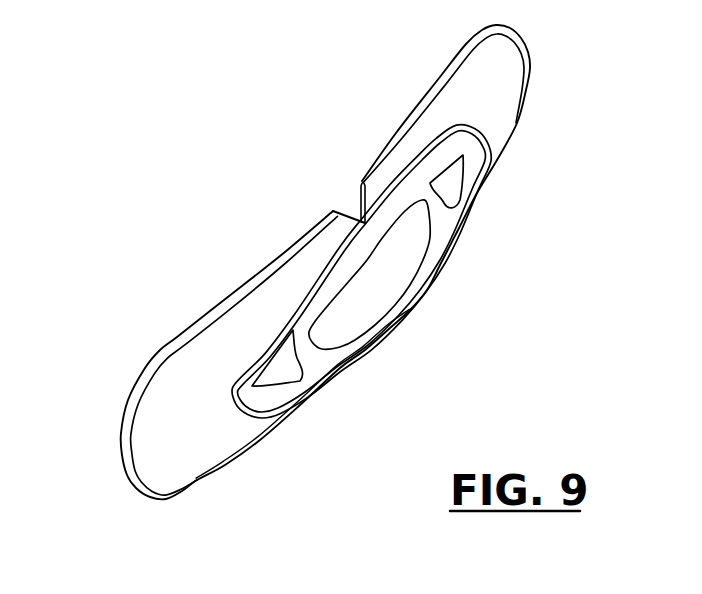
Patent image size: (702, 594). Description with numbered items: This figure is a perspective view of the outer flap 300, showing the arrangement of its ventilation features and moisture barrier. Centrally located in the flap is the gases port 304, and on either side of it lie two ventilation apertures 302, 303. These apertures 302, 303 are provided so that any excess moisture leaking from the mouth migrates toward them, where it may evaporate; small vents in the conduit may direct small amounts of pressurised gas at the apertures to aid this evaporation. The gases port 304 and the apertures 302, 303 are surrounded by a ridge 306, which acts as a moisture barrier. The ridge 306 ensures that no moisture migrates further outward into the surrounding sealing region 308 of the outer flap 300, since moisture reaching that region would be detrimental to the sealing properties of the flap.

The outer flap 300 is at (233, 230).
The ventilation aperture 302 is at (450, 185).
The ventilation aperture 303 is at (287, 380).
The gases port 304 is at (240, 357).
The ridge 306 is at (270, 410).
The sealing region 308 is at (172, 440).